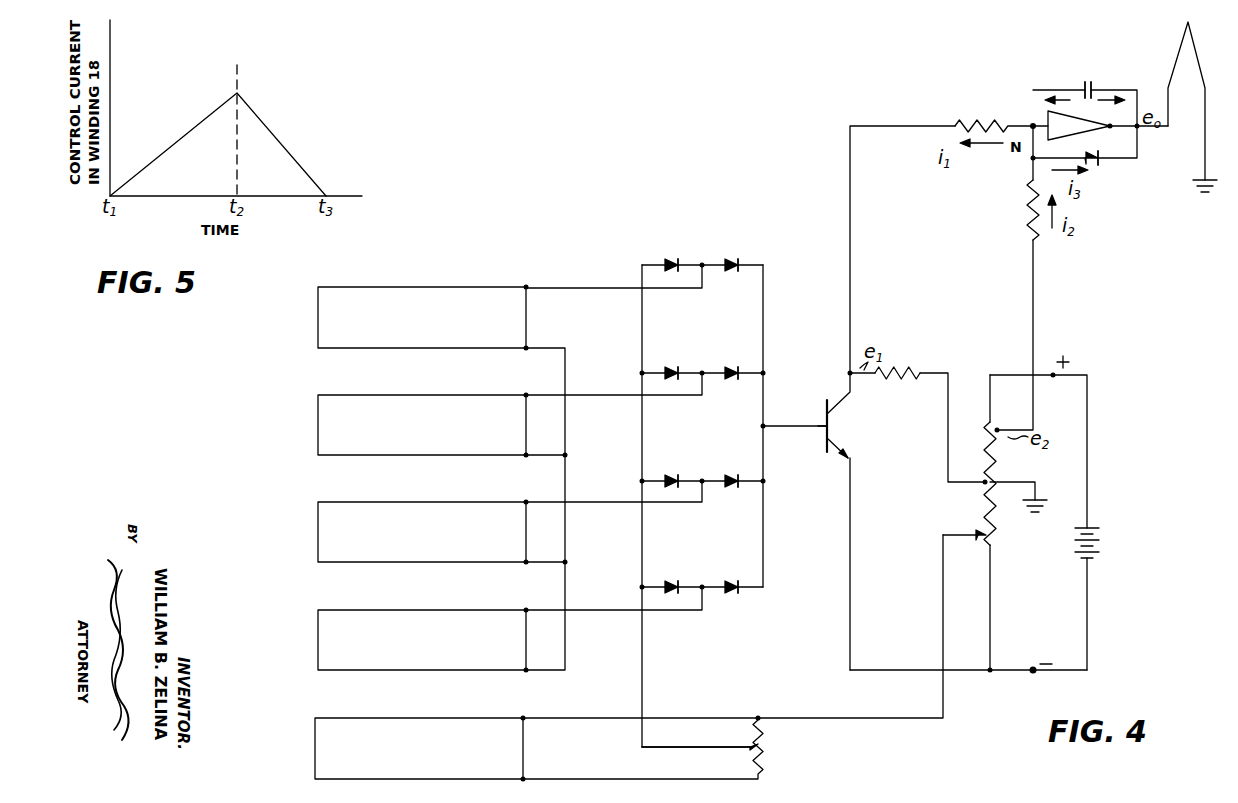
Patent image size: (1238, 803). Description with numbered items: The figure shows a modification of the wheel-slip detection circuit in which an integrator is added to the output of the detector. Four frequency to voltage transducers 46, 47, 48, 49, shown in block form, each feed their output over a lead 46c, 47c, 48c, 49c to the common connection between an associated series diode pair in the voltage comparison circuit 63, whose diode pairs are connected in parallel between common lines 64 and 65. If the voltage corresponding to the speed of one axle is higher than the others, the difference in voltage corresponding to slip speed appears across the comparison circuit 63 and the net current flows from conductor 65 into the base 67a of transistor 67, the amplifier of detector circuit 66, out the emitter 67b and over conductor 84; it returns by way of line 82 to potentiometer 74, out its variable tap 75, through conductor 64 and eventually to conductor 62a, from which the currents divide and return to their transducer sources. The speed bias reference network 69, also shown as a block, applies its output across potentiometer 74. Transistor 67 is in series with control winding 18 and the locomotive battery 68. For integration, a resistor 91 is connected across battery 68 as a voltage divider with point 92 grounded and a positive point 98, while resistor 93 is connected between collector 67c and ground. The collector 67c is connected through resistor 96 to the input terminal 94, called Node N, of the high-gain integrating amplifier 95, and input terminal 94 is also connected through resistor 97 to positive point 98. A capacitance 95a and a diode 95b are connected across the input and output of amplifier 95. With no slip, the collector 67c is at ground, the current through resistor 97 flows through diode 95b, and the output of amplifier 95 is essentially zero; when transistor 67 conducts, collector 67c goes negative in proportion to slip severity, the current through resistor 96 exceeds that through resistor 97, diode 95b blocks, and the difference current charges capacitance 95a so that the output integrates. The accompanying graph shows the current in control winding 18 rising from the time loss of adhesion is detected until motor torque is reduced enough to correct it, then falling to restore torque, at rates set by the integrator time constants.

The control winding 18 is at (1199, 58).
The frequency to voltage transducer 46 is at (318, 324).
The frequency to voltage transducer 47 is at (318, 428).
The frequency to voltage transducer 48 is at (318, 534).
The frequency to voltage transducer 49 is at (318, 641).
The transducer output lead 46c is at (574, 297).
The transducer output lead 47c is at (596, 404).
The transducer output lead 48c is at (589, 511).
The transducer output lead 49c is at (589, 619).
The conductor 62a is at (566, 535).
The voltage comparison circuit 63 is at (708, 450).
The common line 64 is at (643, 654).
The common line 65 is at (764, 467).
The detector circuit 66 is at (907, 500).
The transistor 67 is at (840, 422).
The base 67a is at (822, 422).
The emitter 67b is at (848, 462).
The collector 67c is at (832, 390).
The locomotive battery 68 is at (1100, 548).
The speed bias reference network 69 is at (318, 744).
The potentiometer 74 is at (766, 762).
The variable tap 75 is at (746, 738).
The line 82 is at (868, 718).
The conductor 84 is at (851, 629).
The resistor 91 is at (992, 456).
The point 92 is at (984, 484).
The resistor 93 is at (893, 374).
The input terminal 94 is at (1032, 124).
The high-gain integrating amplifier 95 is at (1100, 119).
The capacitance 95a is at (1092, 88).
The diode 95b is at (1100, 166).
The resistor 96 is at (975, 124).
The resistor 97 is at (1028, 220).
The positive point 98 is at (998, 420).